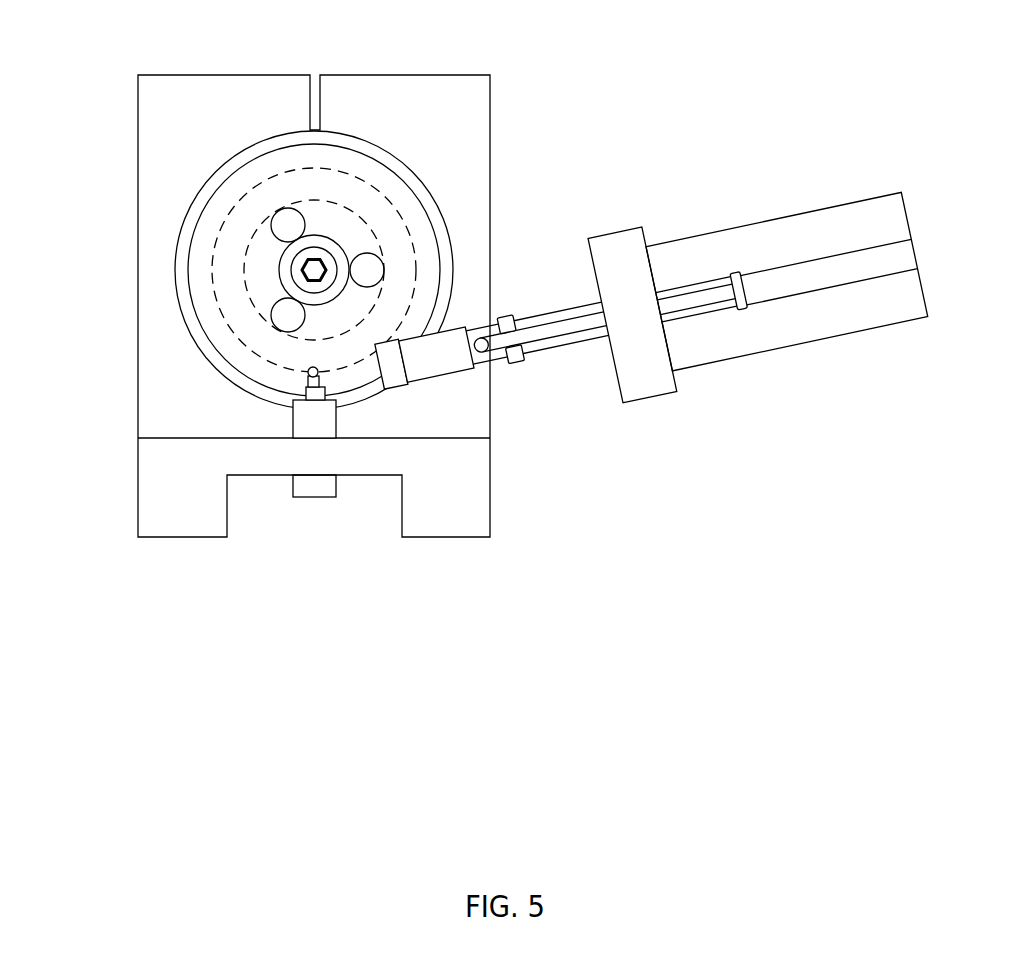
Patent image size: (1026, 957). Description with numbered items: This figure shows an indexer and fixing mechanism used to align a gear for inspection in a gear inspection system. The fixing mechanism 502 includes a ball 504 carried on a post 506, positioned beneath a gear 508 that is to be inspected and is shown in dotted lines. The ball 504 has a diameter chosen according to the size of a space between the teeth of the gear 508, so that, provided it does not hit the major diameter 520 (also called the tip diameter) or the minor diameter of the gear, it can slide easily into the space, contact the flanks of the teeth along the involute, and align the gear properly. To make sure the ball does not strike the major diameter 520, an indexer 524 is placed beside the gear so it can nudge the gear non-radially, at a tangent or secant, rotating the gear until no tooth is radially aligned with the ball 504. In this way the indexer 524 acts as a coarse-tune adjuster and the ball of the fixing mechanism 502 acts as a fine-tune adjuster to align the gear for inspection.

The fixing mechanism 502 is at (303, 420).
The ball 504 is at (303, 373).
The post 506 is at (323, 383).
The gear 508 is at (317, 178).
The major diameter 520 is at (232, 205).
The indexer 524 is at (541, 212).